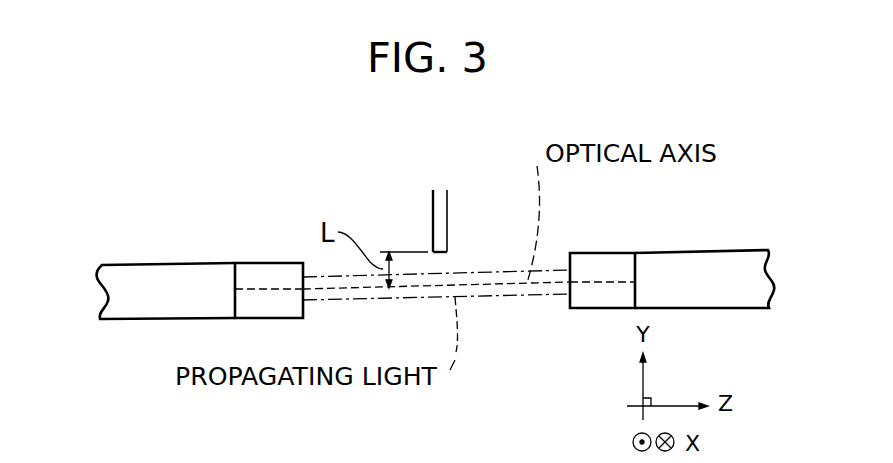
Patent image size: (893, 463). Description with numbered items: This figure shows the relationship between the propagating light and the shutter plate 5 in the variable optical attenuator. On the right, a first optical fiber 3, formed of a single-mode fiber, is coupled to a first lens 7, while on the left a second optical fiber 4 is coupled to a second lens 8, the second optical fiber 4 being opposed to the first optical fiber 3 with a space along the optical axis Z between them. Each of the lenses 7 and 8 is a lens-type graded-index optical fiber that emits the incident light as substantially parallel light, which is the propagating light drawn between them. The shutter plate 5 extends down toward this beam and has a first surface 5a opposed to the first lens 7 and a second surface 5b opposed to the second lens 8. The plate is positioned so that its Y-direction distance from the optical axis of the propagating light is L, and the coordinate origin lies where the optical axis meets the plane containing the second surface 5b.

The first optical fiber 3 is at (703, 262).
The second optical fiber 4 is at (172, 272).
The shutter plate 5 is at (437, 184).
The first surface 5a is at (447, 194).
The second surface 5b is at (432, 192).
The first lens 7 is at (606, 265).
The second lens 8 is at (265, 272).